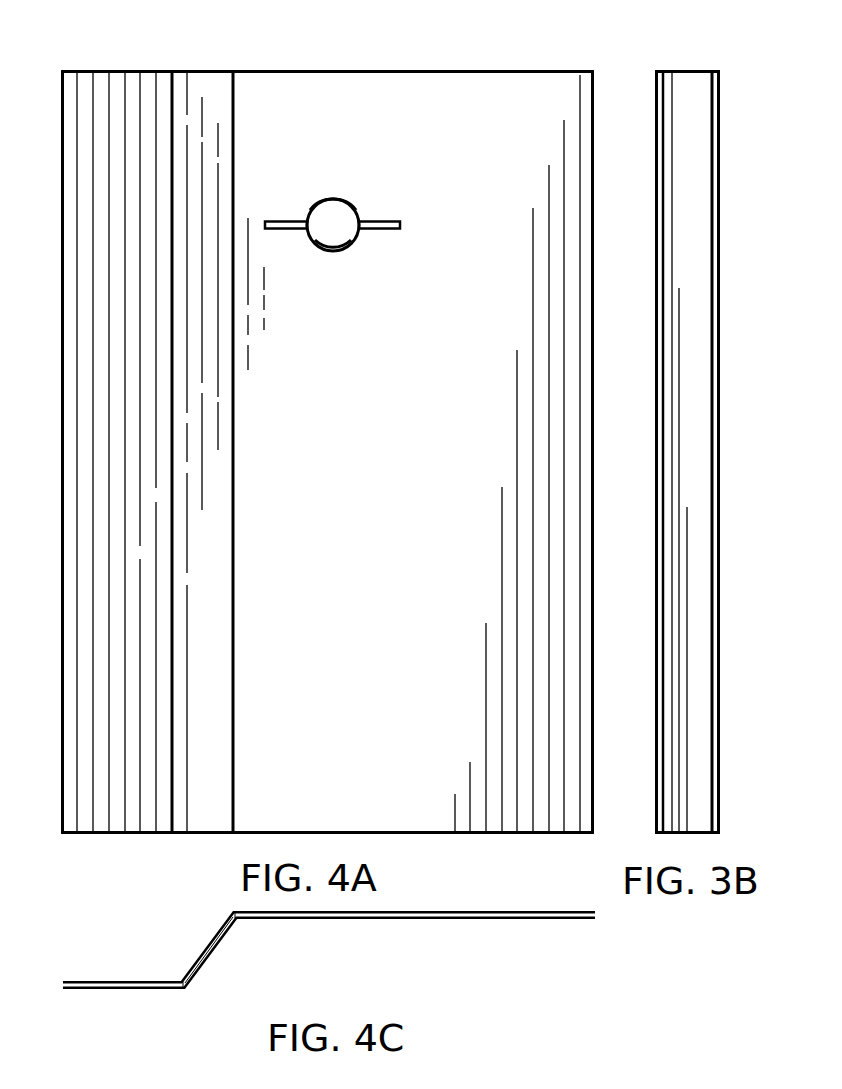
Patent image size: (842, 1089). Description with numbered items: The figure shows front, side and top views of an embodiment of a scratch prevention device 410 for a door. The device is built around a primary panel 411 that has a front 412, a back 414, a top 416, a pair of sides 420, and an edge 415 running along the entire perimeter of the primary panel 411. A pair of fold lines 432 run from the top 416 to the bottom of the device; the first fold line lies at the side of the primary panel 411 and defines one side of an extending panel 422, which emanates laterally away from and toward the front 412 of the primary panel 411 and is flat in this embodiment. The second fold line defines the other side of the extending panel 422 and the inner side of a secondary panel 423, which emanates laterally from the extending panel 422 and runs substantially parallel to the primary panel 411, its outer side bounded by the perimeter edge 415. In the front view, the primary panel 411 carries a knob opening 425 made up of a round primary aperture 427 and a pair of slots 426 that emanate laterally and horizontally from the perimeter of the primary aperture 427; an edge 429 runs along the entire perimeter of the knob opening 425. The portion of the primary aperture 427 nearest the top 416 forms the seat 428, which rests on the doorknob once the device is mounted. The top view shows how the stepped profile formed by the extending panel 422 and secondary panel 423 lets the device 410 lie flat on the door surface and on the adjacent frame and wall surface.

In FIG. 4A, the scratch prevention device 410 is at (410, 64).
In FIG. 4A, the primary panel 411 is at (575, 578).
In FIG. 4A, the front 412 is at (575, 405).
In FIG. 4C, the front 412 is at (410, 920).
In FIG. 4B, the back 414 is at (718, 325).
In FIG. 4C, the back 414 is at (445, 912).
In FIG. 4A, the edge 415 is at (550, 70).
In FIG. 4B, the top 416 is at (693, 70).
In FIG. 4C, the top 416 is at (512, 920).
In FIG. 4C, the sides 420 is at (62, 988).
In FIG. 4A, the extending panel 422 is at (203, 100).
In FIG. 4B, the extending panel 422 is at (705, 745).
In FIG. 4C, the extending panel 422 is at (231, 940).
In FIG. 4A, the secondary panel 423 is at (118, 833).
In FIG. 4B, the secondary panel 423 is at (715, 510).
In FIG. 4C, the secondary panel 423 is at (130, 990).
In FIG. 4A, the knob opening 425 is at (356, 198).
In FIG. 4A, the slots 426 is at (293, 221).
In FIG. 4A, the primary aperture 427 is at (335, 240).
In FIG. 4A, the seat 428 is at (331, 200).
In FIG. 4A, the edge 429 is at (338, 200).
In FIG. 4A, the fold lines 432 is at (172, 70).
In FIG. 4C, the fold lines 432 is at (181, 982).